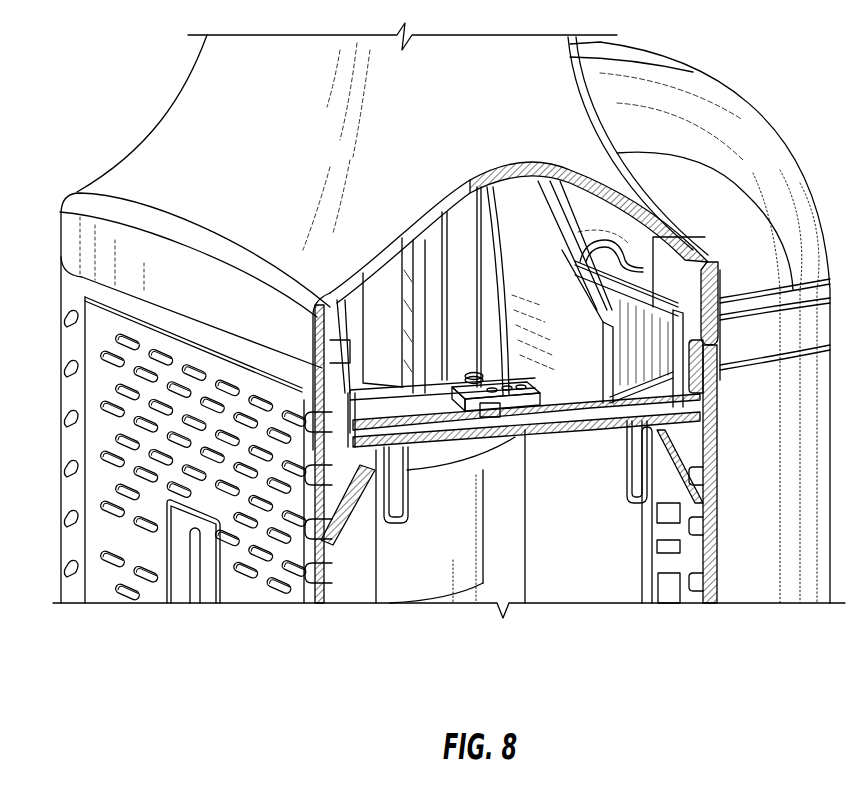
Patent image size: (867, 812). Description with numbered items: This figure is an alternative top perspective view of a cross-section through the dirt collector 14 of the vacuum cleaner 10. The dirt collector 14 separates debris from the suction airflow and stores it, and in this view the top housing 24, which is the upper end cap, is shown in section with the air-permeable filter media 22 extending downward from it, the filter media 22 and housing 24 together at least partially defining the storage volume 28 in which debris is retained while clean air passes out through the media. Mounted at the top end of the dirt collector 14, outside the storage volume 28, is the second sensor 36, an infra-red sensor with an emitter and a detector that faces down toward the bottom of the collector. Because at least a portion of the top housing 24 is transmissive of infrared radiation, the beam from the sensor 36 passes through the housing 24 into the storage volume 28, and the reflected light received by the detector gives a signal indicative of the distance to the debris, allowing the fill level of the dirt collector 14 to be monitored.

The vacuum cleaner 10 is at (91, 113).
The dirt collector 14 is at (95, 390).
The filter media 22 is at (643, 587).
The top housing 24 is at (613, 430).
The storage volume 28 is at (560, 582).
The second sensor 36 is at (485, 393).